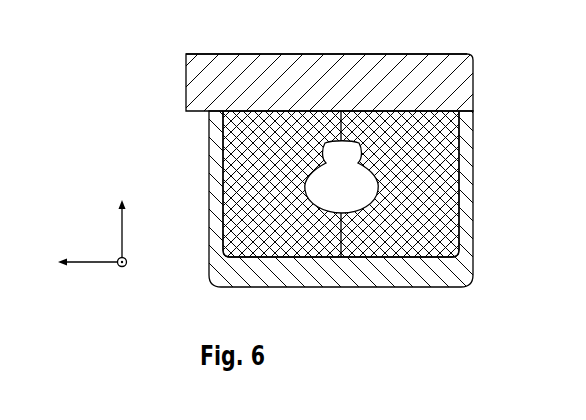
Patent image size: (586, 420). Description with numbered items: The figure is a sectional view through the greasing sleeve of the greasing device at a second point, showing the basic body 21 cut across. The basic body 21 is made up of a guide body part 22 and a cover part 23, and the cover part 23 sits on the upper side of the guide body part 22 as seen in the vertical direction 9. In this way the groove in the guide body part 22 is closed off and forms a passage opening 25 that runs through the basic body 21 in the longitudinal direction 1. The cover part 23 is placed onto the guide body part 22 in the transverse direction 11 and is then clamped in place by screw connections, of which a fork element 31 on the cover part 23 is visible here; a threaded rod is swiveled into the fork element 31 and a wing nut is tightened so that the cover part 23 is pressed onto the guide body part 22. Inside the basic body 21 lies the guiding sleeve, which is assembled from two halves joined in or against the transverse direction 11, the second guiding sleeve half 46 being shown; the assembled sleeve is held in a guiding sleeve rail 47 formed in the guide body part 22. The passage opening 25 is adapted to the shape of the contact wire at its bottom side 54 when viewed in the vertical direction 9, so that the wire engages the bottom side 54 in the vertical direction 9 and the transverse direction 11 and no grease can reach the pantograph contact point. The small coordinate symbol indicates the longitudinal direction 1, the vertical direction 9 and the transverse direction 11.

The basic body 21 is at (166, 36).
The fork element 31 is at (198, 55).
The cover part 23 is at (357, 59).
The guide body part 22 is at (368, 199).
The second guiding sleeve half 46 is at (450, 159).
The guiding sleeve rail 47 is at (232, 161).
The passage opening 25 is at (336, 187).
The bottom side 54 is at (348, 207).
The longitudinal direction 1 is at (99, 219).
The vertical direction 9 is at (119, 208).
The transverse direction 11 is at (67, 262).